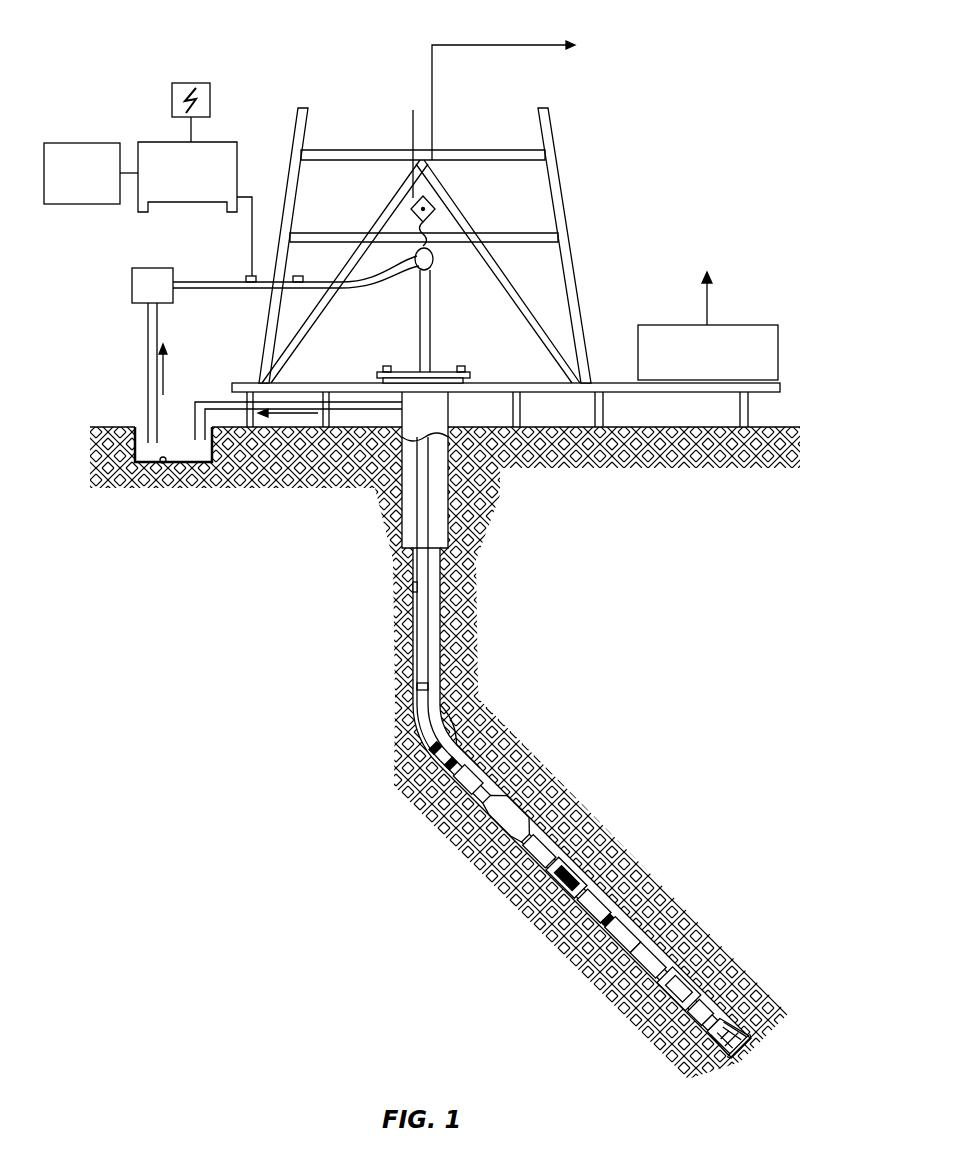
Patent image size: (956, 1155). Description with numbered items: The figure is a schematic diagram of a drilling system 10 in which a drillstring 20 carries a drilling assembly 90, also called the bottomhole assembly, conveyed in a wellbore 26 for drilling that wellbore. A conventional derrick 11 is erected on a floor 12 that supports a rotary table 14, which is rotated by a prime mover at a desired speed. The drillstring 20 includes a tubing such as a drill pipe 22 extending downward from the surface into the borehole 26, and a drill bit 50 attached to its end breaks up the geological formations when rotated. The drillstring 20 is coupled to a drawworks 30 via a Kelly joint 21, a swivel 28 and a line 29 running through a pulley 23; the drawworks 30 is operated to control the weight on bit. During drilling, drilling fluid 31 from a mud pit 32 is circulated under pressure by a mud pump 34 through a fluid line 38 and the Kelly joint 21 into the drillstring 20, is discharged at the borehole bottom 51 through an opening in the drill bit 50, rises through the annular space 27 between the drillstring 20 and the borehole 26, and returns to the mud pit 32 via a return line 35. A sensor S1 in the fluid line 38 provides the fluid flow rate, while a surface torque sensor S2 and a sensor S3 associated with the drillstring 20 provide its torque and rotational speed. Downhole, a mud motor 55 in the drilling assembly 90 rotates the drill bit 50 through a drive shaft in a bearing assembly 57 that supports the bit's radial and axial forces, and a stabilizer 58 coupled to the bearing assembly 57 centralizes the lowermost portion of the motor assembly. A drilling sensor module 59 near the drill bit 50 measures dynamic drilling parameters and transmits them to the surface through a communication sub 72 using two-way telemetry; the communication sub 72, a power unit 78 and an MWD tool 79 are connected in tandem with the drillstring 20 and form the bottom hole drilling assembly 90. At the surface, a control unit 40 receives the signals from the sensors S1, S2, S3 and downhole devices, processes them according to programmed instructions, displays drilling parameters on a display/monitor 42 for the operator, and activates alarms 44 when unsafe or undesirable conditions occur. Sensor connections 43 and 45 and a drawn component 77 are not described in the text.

The drilling system 10 is at (360, 62).
The derrick 11 is at (572, 250).
The floor 12 is at (584, 384).
The rotary table 14 is at (446, 370).
The drillstring 20 is at (434, 636).
The Kelly joint 21 is at (432, 306).
The drill pipe 22 is at (412, 614).
The pulley 23 is at (436, 210).
The wellbore 26 is at (447, 712).
The annular space 27 is at (466, 746).
The swivel 28 is at (415, 272).
The line 29 is at (434, 128).
The drawworks 30 is at (744, 325).
The drilling fluid 31 is at (140, 440).
The mud pit 32 is at (160, 468).
The mud pump 34 is at (144, 268).
The return line 35 is at (370, 410).
The fluid line 38 is at (246, 292).
The surface control unit 40 is at (170, 142).
The display/monitor 42 is at (188, 83).
The sensor connector 43 is at (246, 278).
The alarms 44 is at (88, 208).
The signal line 45 is at (244, 198).
The drill bit 50 is at (744, 1010).
The borehole bottom 51 is at (725, 1068).
The downhole motor 55 is at (608, 880).
The bearing assembly 57 is at (716, 968).
The stabilizer 58 is at (725, 990).
The drilling sensor module 59 is at (708, 1020).
The communication sub 72 is at (414, 718).
The stabilizer 77 is at (504, 824).
The power unit 78 is at (436, 748).
The MWD tool 79 is at (450, 772).
The drilling assembly 90 is at (631, 792).
The sensor S1 is at (288, 278).
The surface torque sensor S2 is at (462, 365).
The sensor S3 is at (387, 365).